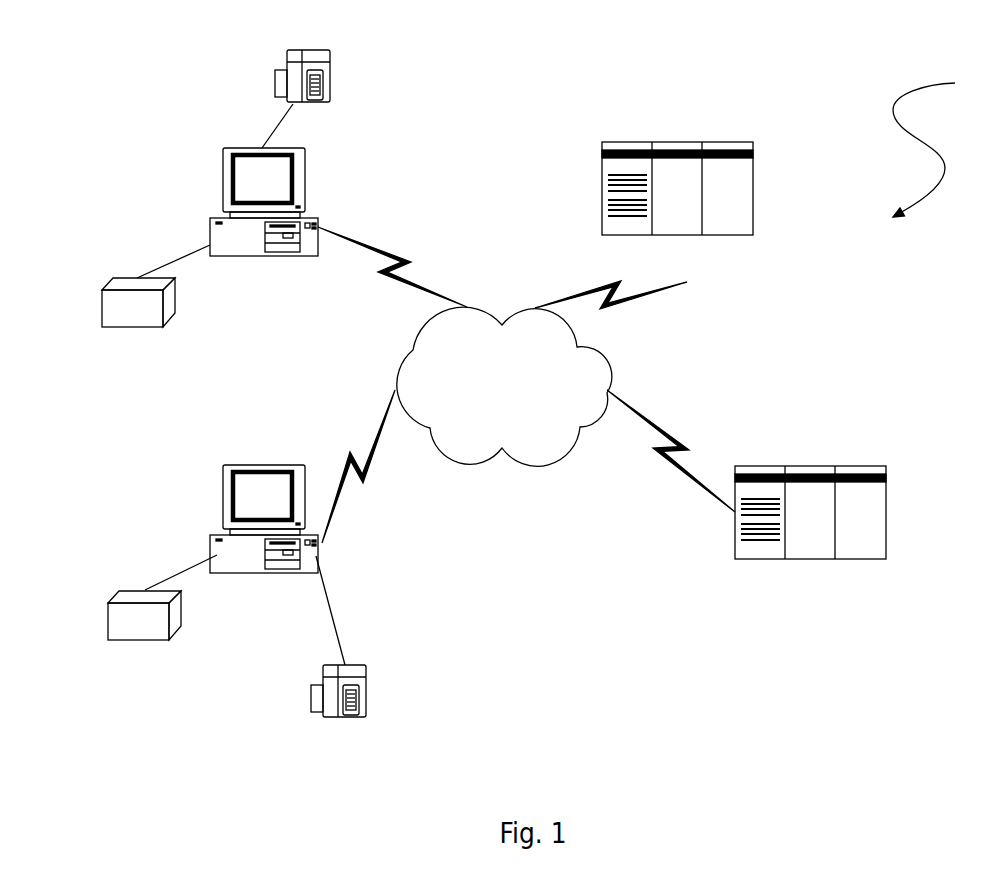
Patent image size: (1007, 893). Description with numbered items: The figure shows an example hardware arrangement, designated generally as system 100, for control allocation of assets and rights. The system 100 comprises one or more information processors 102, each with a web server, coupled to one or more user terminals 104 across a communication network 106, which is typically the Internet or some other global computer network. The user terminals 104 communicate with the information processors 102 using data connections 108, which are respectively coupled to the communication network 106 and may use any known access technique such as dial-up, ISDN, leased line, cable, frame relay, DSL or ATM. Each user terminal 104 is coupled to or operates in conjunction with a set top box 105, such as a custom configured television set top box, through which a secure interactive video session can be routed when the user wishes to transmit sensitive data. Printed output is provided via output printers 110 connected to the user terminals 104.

The system 100 is at (946, 145).
The information processor 102 is at (620, 142).
The user terminal 104 is at (220, 217).
The set top box 105 is at (103, 290).
The communication network 106 is at (435, 353).
The data connection 108 is at (388, 250).
The output printer 110 is at (290, 68).